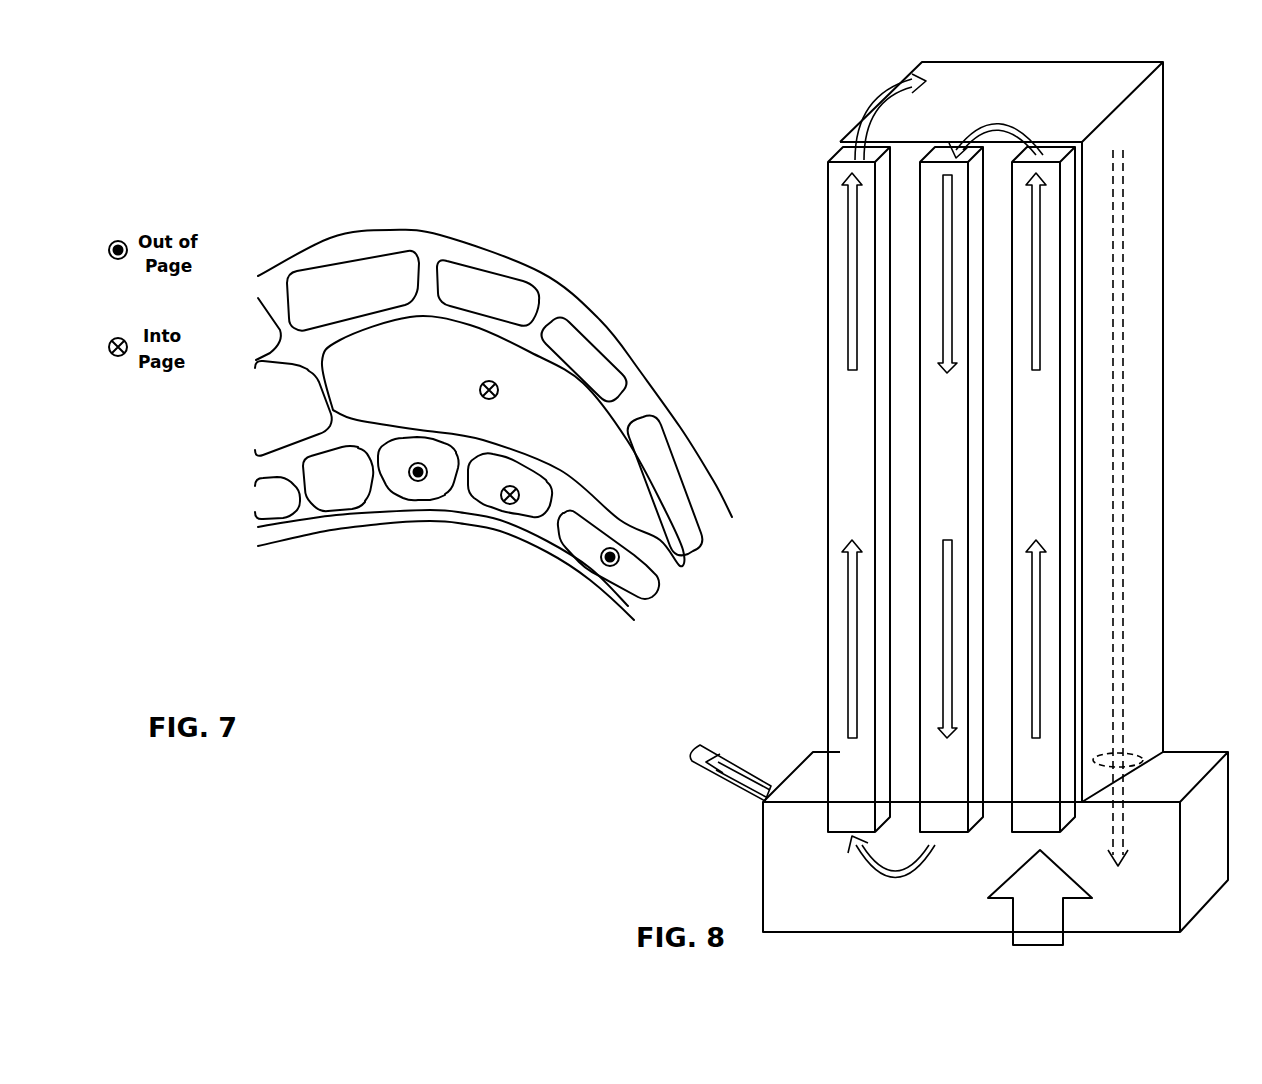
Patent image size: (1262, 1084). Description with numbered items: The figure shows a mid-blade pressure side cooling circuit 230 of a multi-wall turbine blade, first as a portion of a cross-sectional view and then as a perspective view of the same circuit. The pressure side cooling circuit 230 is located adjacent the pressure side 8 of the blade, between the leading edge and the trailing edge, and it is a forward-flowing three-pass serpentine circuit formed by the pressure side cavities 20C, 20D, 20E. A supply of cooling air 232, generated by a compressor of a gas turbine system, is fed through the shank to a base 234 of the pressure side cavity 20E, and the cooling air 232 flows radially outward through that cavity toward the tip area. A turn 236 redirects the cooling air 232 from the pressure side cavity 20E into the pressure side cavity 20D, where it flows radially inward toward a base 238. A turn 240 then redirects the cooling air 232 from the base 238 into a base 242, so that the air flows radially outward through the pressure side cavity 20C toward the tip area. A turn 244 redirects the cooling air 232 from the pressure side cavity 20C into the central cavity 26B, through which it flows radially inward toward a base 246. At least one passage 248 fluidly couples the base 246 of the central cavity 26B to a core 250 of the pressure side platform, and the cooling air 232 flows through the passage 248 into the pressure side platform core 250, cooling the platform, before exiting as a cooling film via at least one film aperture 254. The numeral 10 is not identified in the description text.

In FIG. 7, the electric machine 10 is at (550, 241).
In FIG. 7, the pressure side 8 is at (302, 564).
In FIG. 7, the central cavity 26B is at (503, 441).
In FIG. 8, the central cavity 26B is at (1001, 117).
In FIG. 7, the mid-blade pressure side cooling circuit 230 is at (457, 512).
In FIG. 8, the mid-blade pressure side cooling circuit 230 is at (828, 131).
In FIG. 7, the cooling air 232 is at (418, 483).
In FIG. 8, the cooling air 232 is at (1040, 897).
In FIG. 7, the pressure side cavity 20C is at (394, 493).
In FIG. 8, the pressure side cavity 20C is at (859, 489).
In FIG. 7, the pressure side cavity 20D is at (540, 523).
In FIG. 8, the pressure side cavity 20D is at (951, 489).
In FIG. 7, the pressure side cavity 20E is at (628, 600).
In FIG. 8, the pressure side cavity 20E is at (1043, 489).
In FIG. 8, the turn 244 is at (883, 86).
In FIG. 8, the turn 236 is at (1037, 128).
In FIG. 8, the turn 240 is at (900, 878).
In FIG. 8, the base 242 is at (840, 834).
In FIG. 8, the base 238 is at (948, 834).
In FIG. 8, the base 234 is at (1065, 824).
In FIG. 8, the base 246 is at (1147, 760).
In FIG. 8, the passage 248 is at (1135, 753).
In FIG. 8, the pressure side platform core 250 is at (995, 842).
In FIG. 8, the film aperture 254 is at (752, 760).